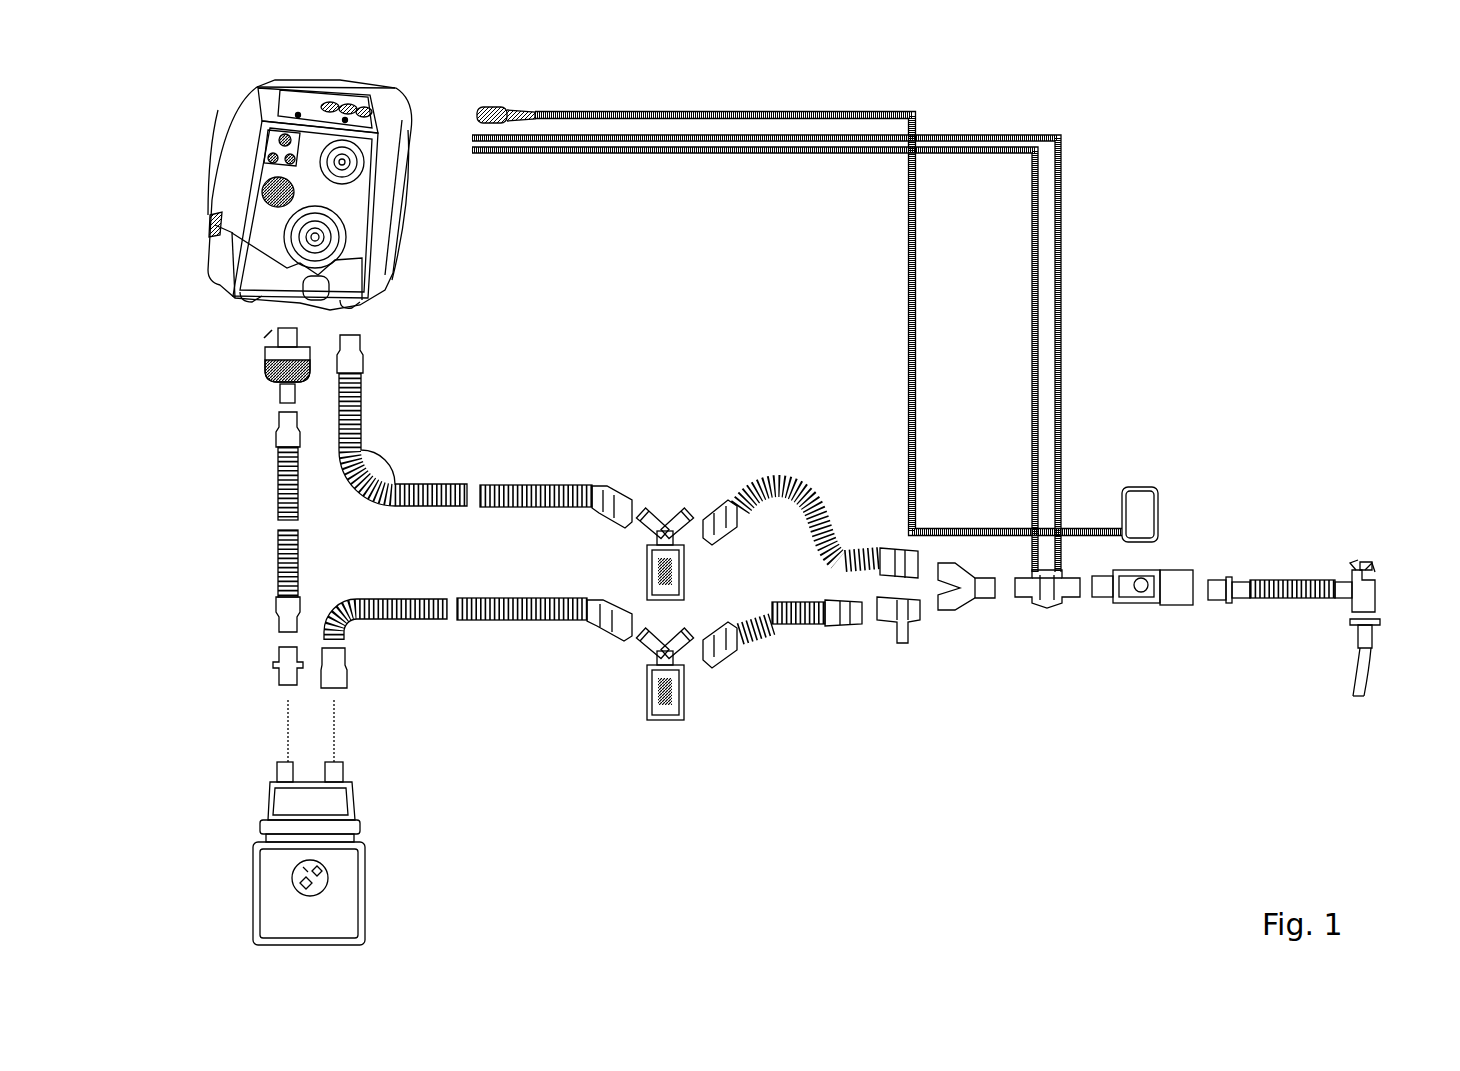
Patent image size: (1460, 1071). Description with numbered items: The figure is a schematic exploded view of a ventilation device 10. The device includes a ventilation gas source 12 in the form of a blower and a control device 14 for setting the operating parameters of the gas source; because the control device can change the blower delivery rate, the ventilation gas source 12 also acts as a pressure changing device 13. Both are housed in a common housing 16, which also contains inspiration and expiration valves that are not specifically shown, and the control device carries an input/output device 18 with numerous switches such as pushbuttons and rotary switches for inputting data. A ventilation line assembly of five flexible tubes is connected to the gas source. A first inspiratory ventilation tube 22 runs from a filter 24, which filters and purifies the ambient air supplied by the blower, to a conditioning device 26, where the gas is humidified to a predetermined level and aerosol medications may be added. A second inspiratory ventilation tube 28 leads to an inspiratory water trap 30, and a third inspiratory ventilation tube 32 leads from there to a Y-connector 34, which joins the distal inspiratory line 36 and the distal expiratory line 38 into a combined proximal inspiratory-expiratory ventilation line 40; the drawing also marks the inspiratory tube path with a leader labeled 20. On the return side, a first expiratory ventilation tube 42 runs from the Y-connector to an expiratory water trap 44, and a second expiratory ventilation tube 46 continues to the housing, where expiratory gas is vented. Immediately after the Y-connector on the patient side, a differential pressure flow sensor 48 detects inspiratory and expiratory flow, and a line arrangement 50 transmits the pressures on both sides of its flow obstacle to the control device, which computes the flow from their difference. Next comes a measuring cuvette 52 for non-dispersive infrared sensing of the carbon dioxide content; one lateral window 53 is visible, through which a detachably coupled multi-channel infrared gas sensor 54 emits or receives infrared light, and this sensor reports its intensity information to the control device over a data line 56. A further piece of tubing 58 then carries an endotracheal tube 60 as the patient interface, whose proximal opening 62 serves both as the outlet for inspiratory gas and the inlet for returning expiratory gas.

The ventilation device 10 is at (150, 128).
The ventilation gas source 12 is at (193, 250).
The pressure changing device 13 is at (344, 169).
The control device 14 is at (403, 77).
The housing 16 is at (400, 245).
The input/output device 18 is at (276, 108).
The inspiratory tube 20 is at (497, 468).
The first inspiratory ventilation tube 22 is at (280, 492).
The filter 24 is at (280, 372).
The conditioning device 26 is at (278, 878).
The second inspiratory ventilation tube 28 is at (508, 610).
The inspiratory water trap 30 is at (668, 722).
The third inspiratory ventilation tube 32 is at (797, 615).
The Y-connector 34 is at (972, 600).
The distal inspiratory line 36 is at (596, 712).
The distal expiratory line 38 is at (631, 452).
The combined proximal inspiratory-expiratory ventilation line 40 is at (1260, 535).
The first expiratory ventilation tube 42 is at (800, 500).
The expiratory water trap 44 is at (672, 586).
The second expiratory ventilation tube 46 is at (378, 490).
The flow sensor 48 is at (1047, 606).
The line arrangement 50 is at (1072, 264).
The measuring cuvette 52 is at (1143, 602).
The lateral window 53 is at (1145, 585).
The infrared gas sensor 54 is at (1135, 512).
The data line 56 is at (912, 380).
The piece of tubing 58 is at (1272, 602).
The endotracheal tube 60 is at (1368, 670).
The proximal opening 62 is at (1360, 700).